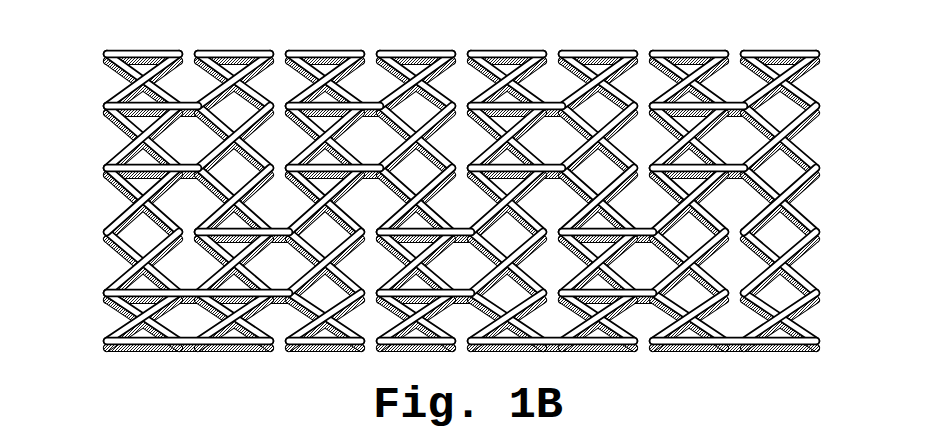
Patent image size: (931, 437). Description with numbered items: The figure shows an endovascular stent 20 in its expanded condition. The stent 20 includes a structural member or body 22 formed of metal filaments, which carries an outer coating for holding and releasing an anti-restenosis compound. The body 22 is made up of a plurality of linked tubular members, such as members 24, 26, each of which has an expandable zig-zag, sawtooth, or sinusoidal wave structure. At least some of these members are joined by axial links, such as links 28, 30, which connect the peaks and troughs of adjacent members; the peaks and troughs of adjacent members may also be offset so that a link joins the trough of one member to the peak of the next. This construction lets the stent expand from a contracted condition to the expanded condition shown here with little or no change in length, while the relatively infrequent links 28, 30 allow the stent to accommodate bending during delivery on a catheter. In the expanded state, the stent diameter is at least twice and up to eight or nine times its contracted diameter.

The stent 20 is at (441, 190).
The structural member or body 22 is at (412, 42).
The tubular member 24 is at (140, 50).
The tubular member 26 is at (236, 50).
The axial link 28 is at (143, 109).
The axial link 30 is at (277, 236).